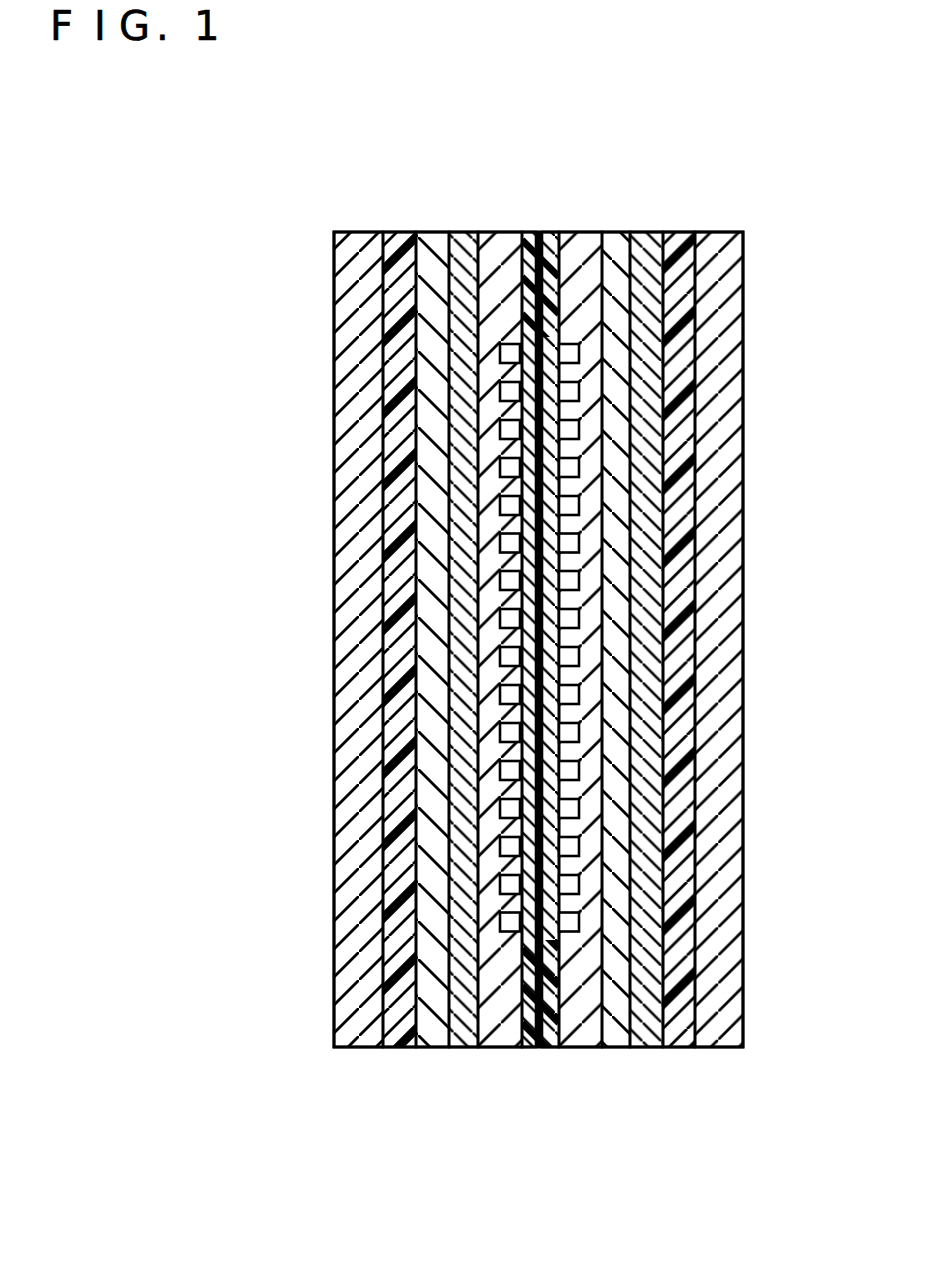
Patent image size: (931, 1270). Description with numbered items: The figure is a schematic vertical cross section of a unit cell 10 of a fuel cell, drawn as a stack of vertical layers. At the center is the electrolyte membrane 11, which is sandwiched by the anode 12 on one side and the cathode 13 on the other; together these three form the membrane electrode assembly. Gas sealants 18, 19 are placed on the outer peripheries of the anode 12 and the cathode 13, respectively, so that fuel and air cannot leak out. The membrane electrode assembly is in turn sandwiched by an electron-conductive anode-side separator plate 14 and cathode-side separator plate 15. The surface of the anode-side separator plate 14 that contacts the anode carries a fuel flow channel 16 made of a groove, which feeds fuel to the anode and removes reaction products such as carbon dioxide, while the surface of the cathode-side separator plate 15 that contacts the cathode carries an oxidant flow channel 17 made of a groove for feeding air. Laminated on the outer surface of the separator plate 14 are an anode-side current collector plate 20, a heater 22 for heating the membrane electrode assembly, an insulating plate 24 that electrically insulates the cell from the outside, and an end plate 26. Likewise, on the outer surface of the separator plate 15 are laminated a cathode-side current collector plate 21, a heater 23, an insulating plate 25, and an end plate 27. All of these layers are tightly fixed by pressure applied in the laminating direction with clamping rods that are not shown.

The unit cell 10 is at (549, 122).
The electrolyte membrane 11 is at (541, 240).
The anode 12 is at (394, 733).
The cathode 13 is at (473, 738).
The anode-side separator plate 14 is at (496, 1049).
The cathode-side separator plate 15 is at (581, 1049).
The fuel flow channel 16 is at (505, 895).
The oxidant flow channel 17 is at (569, 890).
The gas sealant 18 is at (523, 293).
The gas sealant 19 is at (549, 298).
The anode-side current collector plate 20 is at (462, 692).
The cathode-side current collector plate 21 is at (617, 713).
The heater 22 is at (430, 648).
The heater 23 is at (650, 613).
The insulating plate 24 is at (398, 585).
The insulating plate 25 is at (680, 536).
The end plate 26 is at (356, 899).
The end plate 27 is at (718, 921).